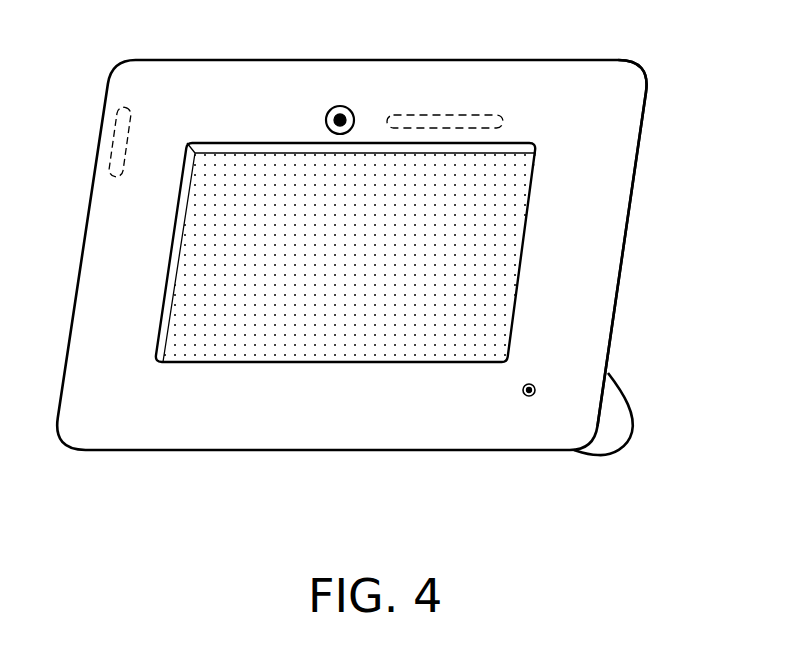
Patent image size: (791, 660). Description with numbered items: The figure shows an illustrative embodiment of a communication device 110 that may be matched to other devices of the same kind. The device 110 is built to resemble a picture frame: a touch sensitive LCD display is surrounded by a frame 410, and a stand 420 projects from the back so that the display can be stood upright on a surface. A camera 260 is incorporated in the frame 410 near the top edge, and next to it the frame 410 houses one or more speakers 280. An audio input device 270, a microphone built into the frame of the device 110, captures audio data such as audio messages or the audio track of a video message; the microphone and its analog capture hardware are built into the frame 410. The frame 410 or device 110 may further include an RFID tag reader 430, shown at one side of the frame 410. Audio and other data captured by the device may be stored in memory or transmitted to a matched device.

The device 110 is at (185, 490).
The camera 260 is at (340, 105).
The audio input device 270 is at (530, 397).
The speaker 280 is at (447, 116).
The frame 410 is at (578, 85).
The stand 420 is at (620, 428).
The RFID tag reader 430 is at (115, 140).